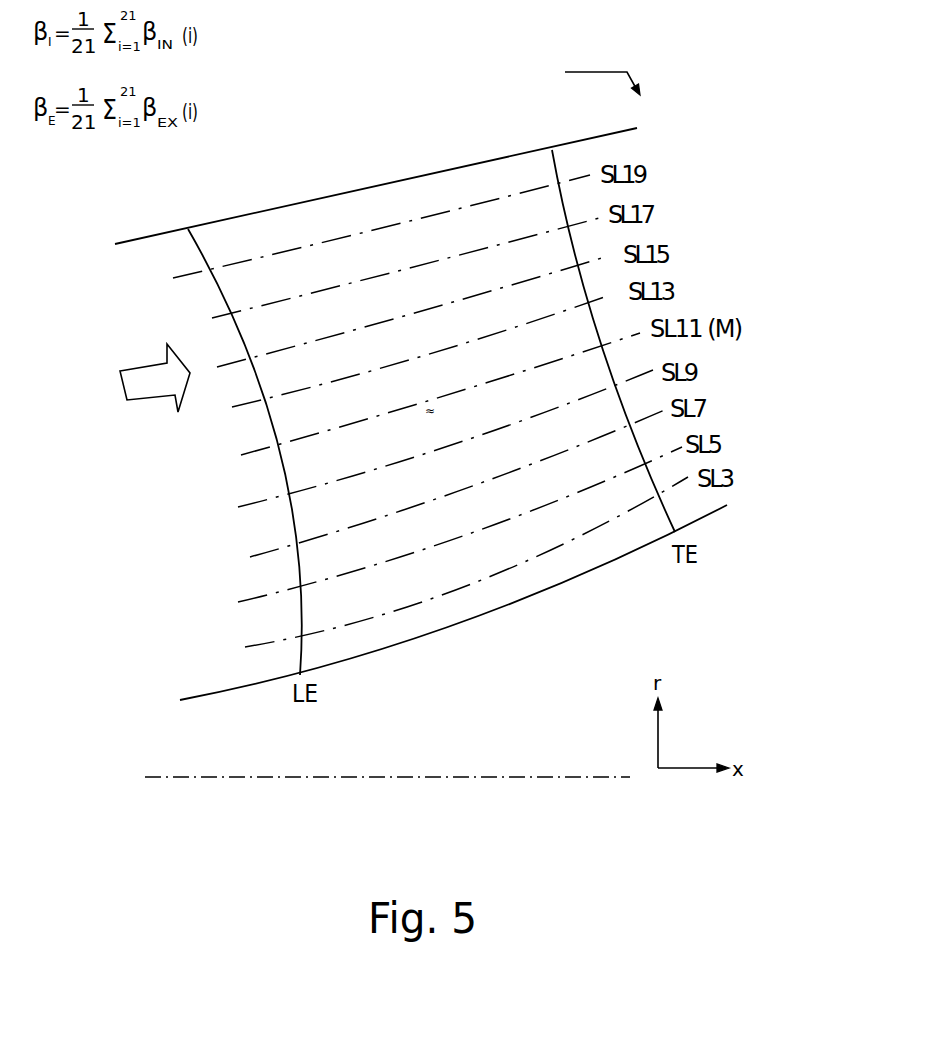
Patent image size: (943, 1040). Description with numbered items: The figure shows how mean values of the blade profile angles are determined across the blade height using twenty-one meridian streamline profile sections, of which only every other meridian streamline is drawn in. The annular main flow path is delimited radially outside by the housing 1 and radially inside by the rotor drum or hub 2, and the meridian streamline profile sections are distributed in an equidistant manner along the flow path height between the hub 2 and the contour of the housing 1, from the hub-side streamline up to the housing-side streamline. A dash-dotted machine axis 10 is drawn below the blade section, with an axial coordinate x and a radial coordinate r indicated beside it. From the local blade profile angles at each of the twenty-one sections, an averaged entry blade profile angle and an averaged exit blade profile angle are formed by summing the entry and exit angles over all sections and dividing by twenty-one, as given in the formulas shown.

The housing 1 is at (332, 196).
The hub 2 is at (563, 585).
The machine axis 10 is at (512, 778).